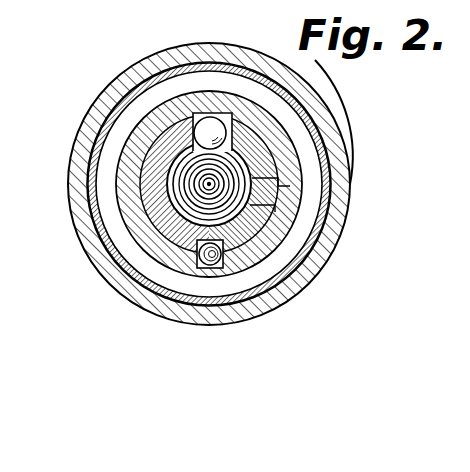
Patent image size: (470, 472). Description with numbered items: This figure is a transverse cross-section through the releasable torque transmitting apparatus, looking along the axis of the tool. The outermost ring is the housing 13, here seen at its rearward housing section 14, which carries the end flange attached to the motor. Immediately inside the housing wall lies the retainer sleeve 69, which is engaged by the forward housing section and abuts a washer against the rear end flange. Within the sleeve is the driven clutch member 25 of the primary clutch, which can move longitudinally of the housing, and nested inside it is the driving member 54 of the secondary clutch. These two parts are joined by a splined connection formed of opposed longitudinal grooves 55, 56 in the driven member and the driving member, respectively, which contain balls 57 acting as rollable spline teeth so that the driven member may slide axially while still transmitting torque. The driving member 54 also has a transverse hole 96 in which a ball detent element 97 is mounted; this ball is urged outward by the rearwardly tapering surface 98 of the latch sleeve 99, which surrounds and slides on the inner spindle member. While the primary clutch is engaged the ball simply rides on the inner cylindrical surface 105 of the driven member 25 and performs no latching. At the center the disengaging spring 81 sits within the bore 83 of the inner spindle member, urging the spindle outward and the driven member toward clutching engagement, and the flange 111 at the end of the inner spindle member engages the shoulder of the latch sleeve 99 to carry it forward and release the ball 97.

The housing 13 is at (84, 115).
The rearward housing section 14 is at (327, 108).
The driven clutch member 25 is at (120, 178).
The driving member of secondary clutch 54 is at (276, 195).
The longitudinal groove 55 is at (215, 263).
The longitudinal groove 56 is at (190, 265).
The balls 57 is at (207, 267).
The retainer sleeve 69 is at (325, 148).
The disengaging spring 81 is at (218, 196).
The bore 83 is at (147, 226).
The transverse hole 96 is at (234, 116).
The ball detent element 97 is at (212, 128).
The tapering surface 98 is at (178, 197).
The latch sleeve 99 is at (272, 212).
The inner cylindrical surface 105 is at (143, 153).
The flange 111 is at (290, 181).